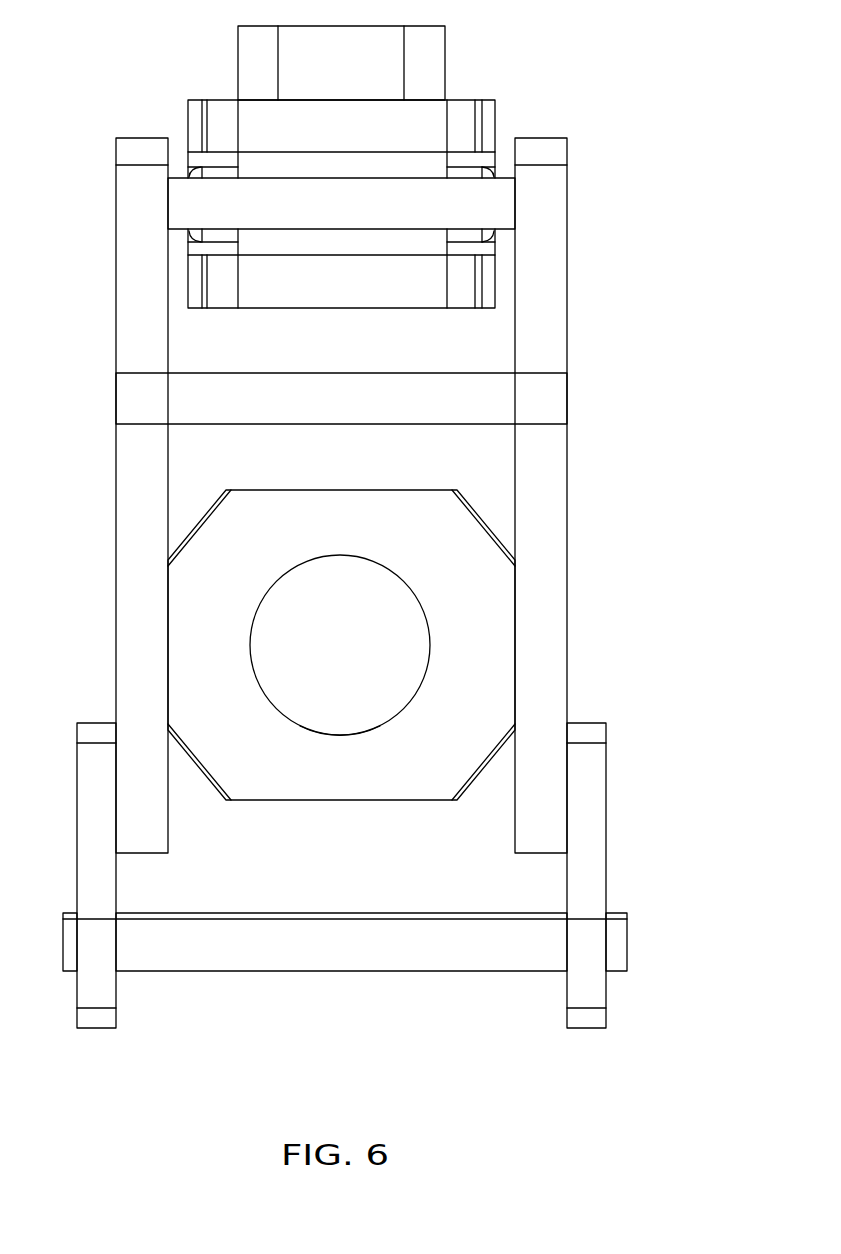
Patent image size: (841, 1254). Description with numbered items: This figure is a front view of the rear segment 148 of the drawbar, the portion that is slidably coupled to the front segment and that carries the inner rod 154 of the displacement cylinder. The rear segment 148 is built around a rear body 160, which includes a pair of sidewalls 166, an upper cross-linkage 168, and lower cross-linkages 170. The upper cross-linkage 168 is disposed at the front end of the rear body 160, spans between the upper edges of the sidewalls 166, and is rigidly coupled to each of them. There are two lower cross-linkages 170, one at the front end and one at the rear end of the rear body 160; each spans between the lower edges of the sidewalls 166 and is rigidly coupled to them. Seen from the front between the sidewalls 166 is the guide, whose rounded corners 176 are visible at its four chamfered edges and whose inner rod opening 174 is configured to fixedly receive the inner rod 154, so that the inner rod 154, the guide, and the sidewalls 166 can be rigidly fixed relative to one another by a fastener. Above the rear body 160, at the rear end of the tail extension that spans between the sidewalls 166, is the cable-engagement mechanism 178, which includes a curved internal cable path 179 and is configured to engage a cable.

The rear segment 148 is at (676, 201).
The inner rod 154 is at (313, 640).
The rear body 160 is at (426, 659).
The sidewalls 166 is at (137, 497).
The upper cross-linkage 168 is at (475, 393).
The lower cross-linkages 170 is at (491, 952).
The inner rod opening 174 is at (343, 733).
The rounded corners 176 is at (193, 522).
The cable-engagement mechanism 178 is at (413, 112).
The curved internal cable path 179 is at (330, 245).